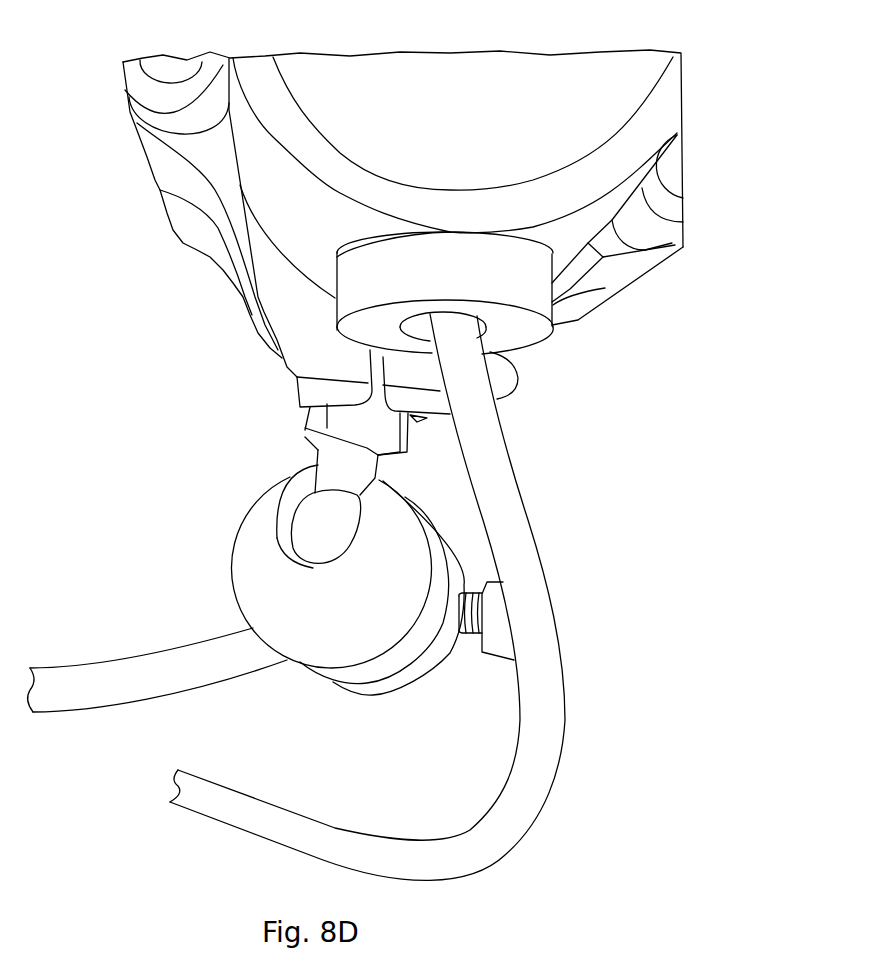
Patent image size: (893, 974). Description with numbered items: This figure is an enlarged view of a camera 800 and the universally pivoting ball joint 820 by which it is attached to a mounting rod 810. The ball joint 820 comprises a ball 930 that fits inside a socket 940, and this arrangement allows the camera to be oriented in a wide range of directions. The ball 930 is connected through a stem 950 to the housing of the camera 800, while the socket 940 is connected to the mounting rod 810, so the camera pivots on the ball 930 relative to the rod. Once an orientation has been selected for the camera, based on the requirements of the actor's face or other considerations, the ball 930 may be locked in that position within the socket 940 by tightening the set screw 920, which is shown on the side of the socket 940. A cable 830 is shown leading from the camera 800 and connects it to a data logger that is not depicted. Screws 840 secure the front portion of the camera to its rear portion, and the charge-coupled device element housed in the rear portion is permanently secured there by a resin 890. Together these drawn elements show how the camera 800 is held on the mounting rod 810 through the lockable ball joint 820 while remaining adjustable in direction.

The camera 800 is at (412, 214).
The mounting rod 810 is at (110, 697).
The universally pivoting ball joint 820 is at (299, 556).
The cable 830 is at (505, 490).
The screws 840 is at (163, 69).
The resin 890 is at (542, 63).
The set screw 920 is at (495, 647).
The ball 930 is at (307, 510).
The socket 940 is at (250, 575).
The stem 950 is at (335, 450).